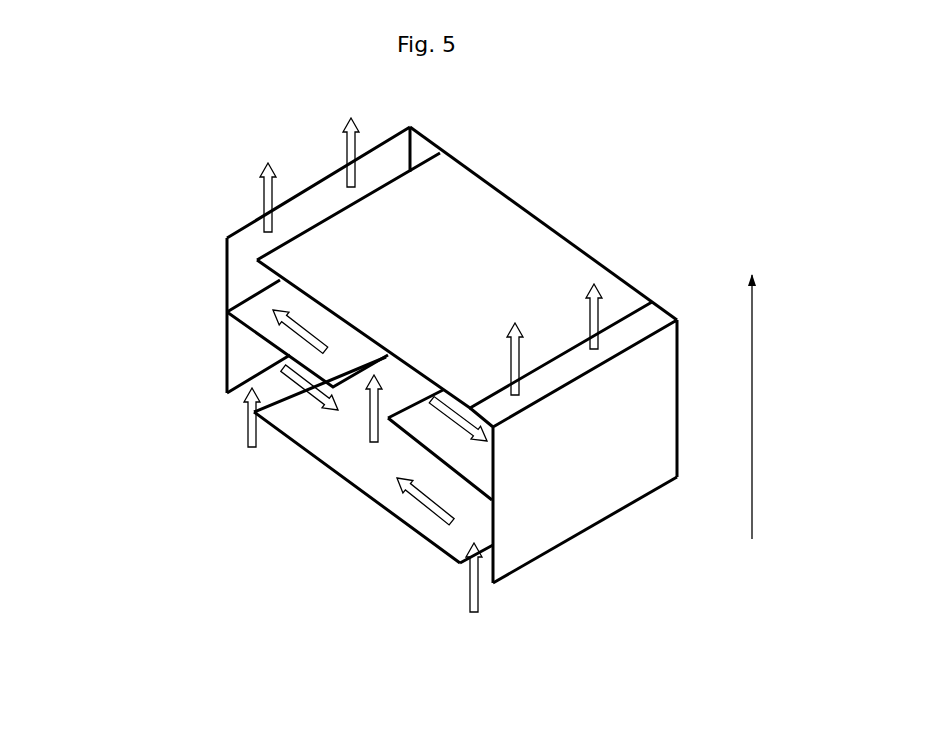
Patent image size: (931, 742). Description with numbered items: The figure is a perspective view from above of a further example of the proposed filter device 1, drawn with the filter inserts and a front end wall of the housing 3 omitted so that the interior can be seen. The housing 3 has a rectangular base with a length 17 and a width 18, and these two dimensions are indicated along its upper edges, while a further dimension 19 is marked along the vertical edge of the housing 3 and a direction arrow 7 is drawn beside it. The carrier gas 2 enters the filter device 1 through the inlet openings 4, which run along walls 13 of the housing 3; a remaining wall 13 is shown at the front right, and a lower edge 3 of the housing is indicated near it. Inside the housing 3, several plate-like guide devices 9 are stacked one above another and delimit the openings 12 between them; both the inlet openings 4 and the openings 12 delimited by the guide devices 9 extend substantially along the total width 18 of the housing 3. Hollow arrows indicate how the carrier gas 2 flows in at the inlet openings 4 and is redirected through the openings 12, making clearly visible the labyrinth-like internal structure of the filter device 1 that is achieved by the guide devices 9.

The filter device 1 is at (652, 183).
The carrier gas 2 is at (247, 448).
The housing 3 is at (607, 538).
The inlet openings 4 is at (233, 407).
The stacking direction 7 is at (764, 407).
The guide devices 9 is at (456, 282).
The openings 12 is at (332, 192).
The walls 13 is at (602, 455).
The length 17 is at (717, 290).
The width 18 is at (227, 238).
The height dimension 19 is at (227, 393).